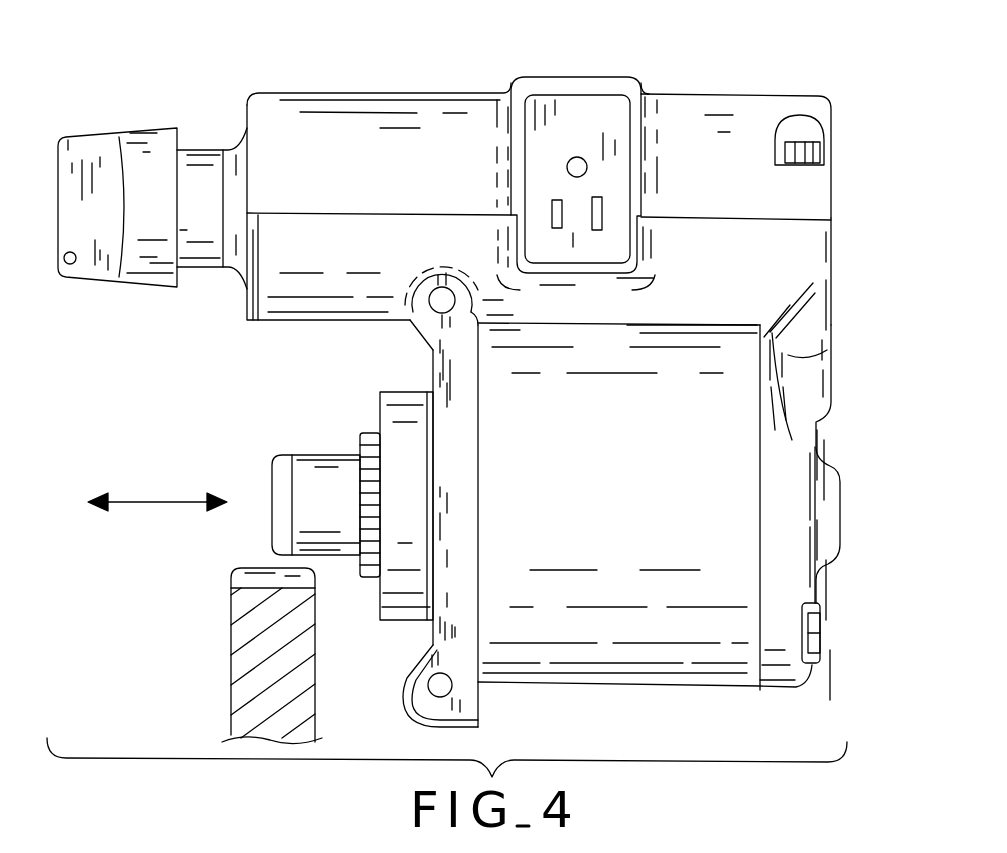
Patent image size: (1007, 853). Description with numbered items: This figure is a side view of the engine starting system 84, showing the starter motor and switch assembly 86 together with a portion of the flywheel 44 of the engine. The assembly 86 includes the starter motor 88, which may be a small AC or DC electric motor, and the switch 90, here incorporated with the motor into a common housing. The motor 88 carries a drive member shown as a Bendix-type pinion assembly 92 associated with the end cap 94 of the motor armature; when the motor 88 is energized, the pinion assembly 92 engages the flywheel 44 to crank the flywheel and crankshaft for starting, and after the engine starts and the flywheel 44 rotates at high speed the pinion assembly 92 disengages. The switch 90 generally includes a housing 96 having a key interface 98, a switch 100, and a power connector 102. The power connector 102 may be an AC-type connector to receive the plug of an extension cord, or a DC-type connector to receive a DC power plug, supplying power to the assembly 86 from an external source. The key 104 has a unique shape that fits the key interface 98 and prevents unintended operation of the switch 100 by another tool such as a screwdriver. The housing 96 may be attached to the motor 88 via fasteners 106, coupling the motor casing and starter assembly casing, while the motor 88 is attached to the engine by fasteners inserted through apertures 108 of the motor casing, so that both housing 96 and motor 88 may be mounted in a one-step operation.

The flywheel 44 is at (231, 682).
The engine starting system 84 is at (588, 147).
The starter motor and switch assembly 86 is at (580, 60).
The starter motor 88 is at (715, 493).
The switch 90 is at (539, 173).
The pinion assembly 92 is at (306, 438).
The end cap 94 is at (463, 440).
The housing 96 is at (805, 257).
The key interface 98 is at (202, 245).
The switch 100 is at (282, 108).
The power connector 102 is at (567, 113).
The key 104 is at (88, 262).
The fasteners 106 is at (804, 140).
The apertures 108 is at (437, 312).